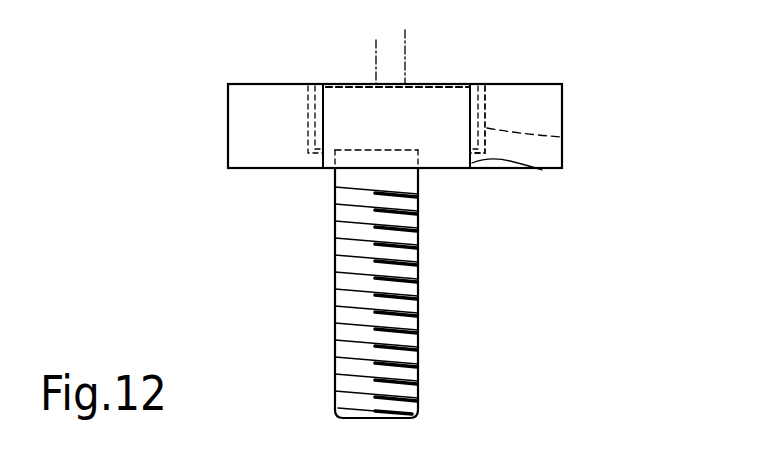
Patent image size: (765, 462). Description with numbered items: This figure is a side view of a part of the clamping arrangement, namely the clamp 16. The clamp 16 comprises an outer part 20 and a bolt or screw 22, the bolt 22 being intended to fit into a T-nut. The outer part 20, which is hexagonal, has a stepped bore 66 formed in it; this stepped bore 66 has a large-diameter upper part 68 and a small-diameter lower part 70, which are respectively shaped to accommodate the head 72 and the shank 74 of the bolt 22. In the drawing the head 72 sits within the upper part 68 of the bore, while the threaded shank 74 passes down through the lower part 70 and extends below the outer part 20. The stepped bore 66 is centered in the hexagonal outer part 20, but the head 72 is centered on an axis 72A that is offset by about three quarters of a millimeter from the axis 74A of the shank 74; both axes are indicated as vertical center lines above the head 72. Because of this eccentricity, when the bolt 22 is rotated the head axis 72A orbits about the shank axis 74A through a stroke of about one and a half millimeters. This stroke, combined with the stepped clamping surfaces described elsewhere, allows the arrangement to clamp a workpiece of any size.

The clamp 16 is at (272, 203).
The outer part 20 is at (543, 102).
The bolt 22 is at (360, 303).
The stepped bore 66 is at (562, 137).
The large-diameter upper part 68 is at (490, 100).
The small-diameter lower part 70 is at (542, 170).
The head 72 is at (415, 106).
The head axis 72A is at (405, 30).
The shank 74 is at (395, 266).
The shank axis 74A is at (376, 40).